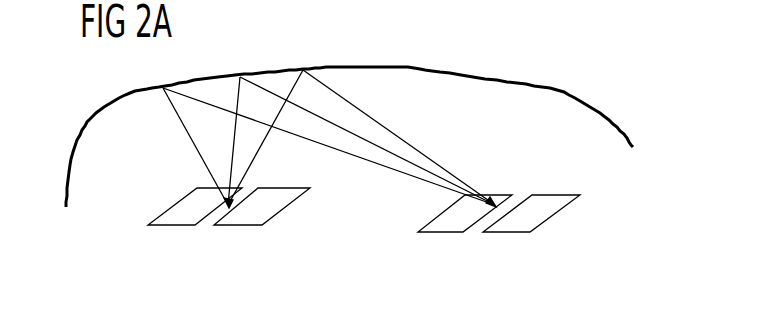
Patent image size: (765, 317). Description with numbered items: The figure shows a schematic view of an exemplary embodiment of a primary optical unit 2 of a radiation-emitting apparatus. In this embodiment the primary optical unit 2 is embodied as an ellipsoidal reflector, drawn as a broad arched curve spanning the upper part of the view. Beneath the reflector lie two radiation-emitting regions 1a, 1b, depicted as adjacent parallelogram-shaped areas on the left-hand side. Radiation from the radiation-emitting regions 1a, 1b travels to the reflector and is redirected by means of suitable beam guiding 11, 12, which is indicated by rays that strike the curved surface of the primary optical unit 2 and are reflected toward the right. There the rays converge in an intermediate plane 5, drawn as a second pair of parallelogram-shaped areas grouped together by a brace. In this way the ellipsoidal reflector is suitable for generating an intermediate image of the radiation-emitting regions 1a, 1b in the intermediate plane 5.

The primary optical unit 2 is at (457, 73).
The beam guiding 11 is at (187, 138).
The beam guiding 12 is at (265, 148).
The radiation-emitting region 1a is at (182, 212).
The radiation-emitting region 1b is at (250, 212).
The intermediate plane 5 is at (537, 238).